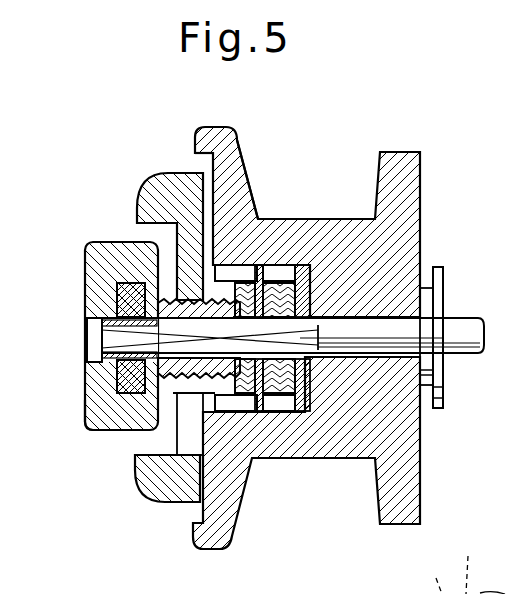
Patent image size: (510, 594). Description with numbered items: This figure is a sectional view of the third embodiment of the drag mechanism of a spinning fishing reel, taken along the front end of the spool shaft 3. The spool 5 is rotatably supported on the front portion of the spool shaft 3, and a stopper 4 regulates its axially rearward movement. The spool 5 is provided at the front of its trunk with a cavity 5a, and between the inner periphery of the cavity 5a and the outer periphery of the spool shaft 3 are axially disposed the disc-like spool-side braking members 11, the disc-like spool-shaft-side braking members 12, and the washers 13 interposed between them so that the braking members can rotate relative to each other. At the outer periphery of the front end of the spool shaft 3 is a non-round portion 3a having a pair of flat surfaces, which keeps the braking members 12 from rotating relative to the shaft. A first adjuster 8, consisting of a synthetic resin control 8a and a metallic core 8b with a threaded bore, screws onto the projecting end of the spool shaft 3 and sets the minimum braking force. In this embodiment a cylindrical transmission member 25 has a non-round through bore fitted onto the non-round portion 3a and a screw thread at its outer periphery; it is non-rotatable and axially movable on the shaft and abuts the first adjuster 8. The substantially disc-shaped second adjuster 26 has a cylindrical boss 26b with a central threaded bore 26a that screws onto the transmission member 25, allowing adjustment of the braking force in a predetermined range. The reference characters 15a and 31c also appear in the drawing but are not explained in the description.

The spool shaft 3 is at (420, 287).
The non-round portion 3a is at (108, 342).
The stopper 4 is at (440, 292).
The spool 5 is at (350, 216).
The cavity 5a is at (273, 268).
The first adjuster 8 is at (97, 238).
The control 8a is at (87, 417).
The metallic core 8b is at (120, 378).
The spool-side braking members 11 is at (303, 412).
The spool-shaft-side braking members 12 is at (262, 412).
The washers 13 is at (280, 412).
The base portion 15a is at (438, 573).
The transmission member 25 is at (158, 313).
The second adjuster 26 is at (162, 175).
The threaded bore 26a is at (210, 270).
The cylindrical boss 26b is at (225, 275).
The support member 31c is at (480, 562).